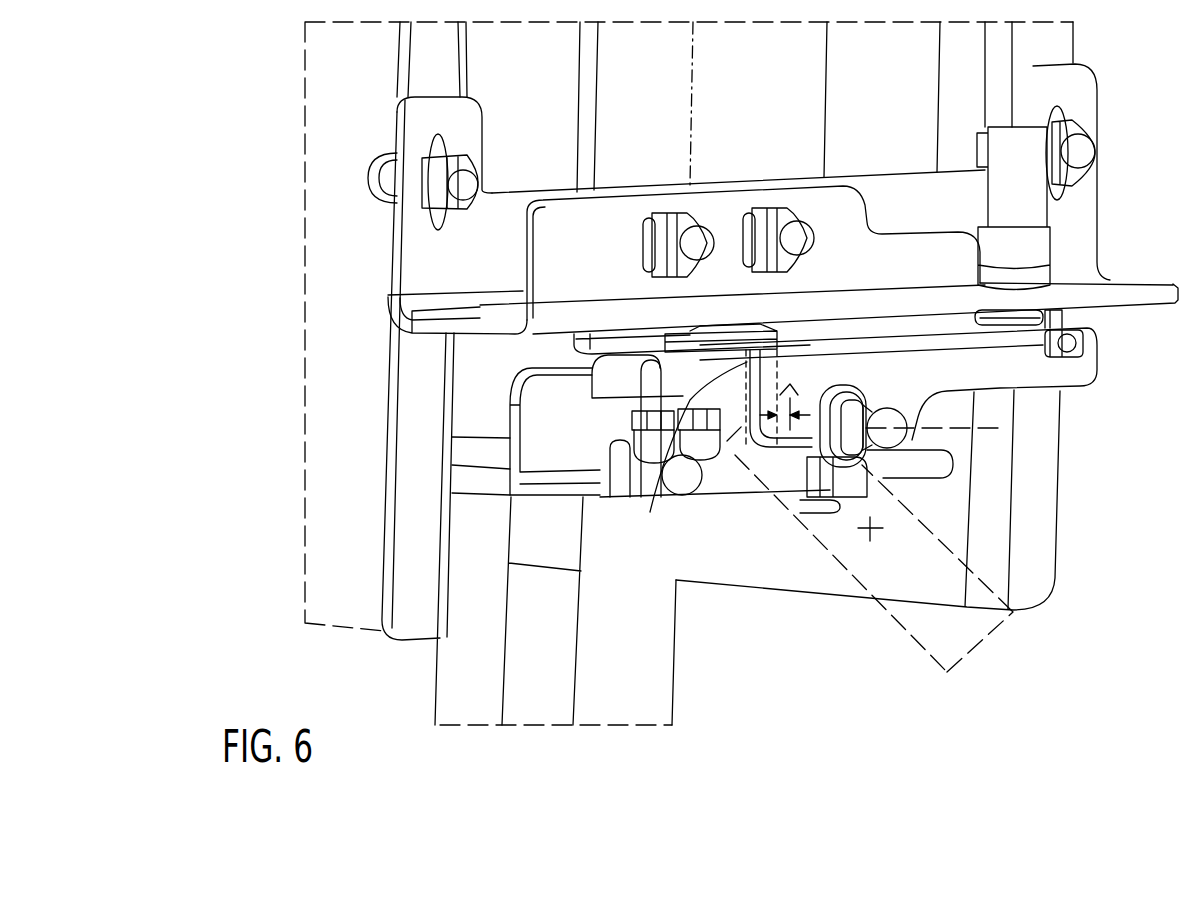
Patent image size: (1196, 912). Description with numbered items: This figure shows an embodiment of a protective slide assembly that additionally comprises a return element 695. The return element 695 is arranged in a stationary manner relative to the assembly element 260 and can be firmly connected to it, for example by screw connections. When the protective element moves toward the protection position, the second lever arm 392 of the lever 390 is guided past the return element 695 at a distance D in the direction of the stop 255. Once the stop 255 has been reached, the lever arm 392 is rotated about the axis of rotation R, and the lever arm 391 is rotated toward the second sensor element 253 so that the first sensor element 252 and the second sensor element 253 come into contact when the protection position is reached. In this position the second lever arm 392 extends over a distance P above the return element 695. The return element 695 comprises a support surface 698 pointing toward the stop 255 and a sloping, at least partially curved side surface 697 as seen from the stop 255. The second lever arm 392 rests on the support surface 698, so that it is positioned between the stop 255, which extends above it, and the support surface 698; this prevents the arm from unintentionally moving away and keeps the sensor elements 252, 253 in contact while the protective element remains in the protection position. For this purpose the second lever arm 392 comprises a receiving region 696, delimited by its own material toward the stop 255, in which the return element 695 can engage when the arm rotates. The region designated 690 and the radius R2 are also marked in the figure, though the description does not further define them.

The assembly element 260 is at (376, 592).
The stop 255 is at (850, 328).
The second sensor element 253 is at (1040, 248).
The first sensor element 252 is at (1058, 312).
The lever 390 is at (1088, 365).
The lever arm 391 is at (1022, 371).
The second lever arm 392 is at (795, 470).
The return element 695 is at (598, 415).
The receiving region 696 is at (733, 450).
The side surface 697 is at (651, 497).
The support surface 698 is at (666, 352).
The adjustment region 690 is at (893, 612).
The distance P is at (762, 342).
The distance D is at (800, 397).
The axis of rotation R is at (933, 443).
The radius R2 is at (888, 530).